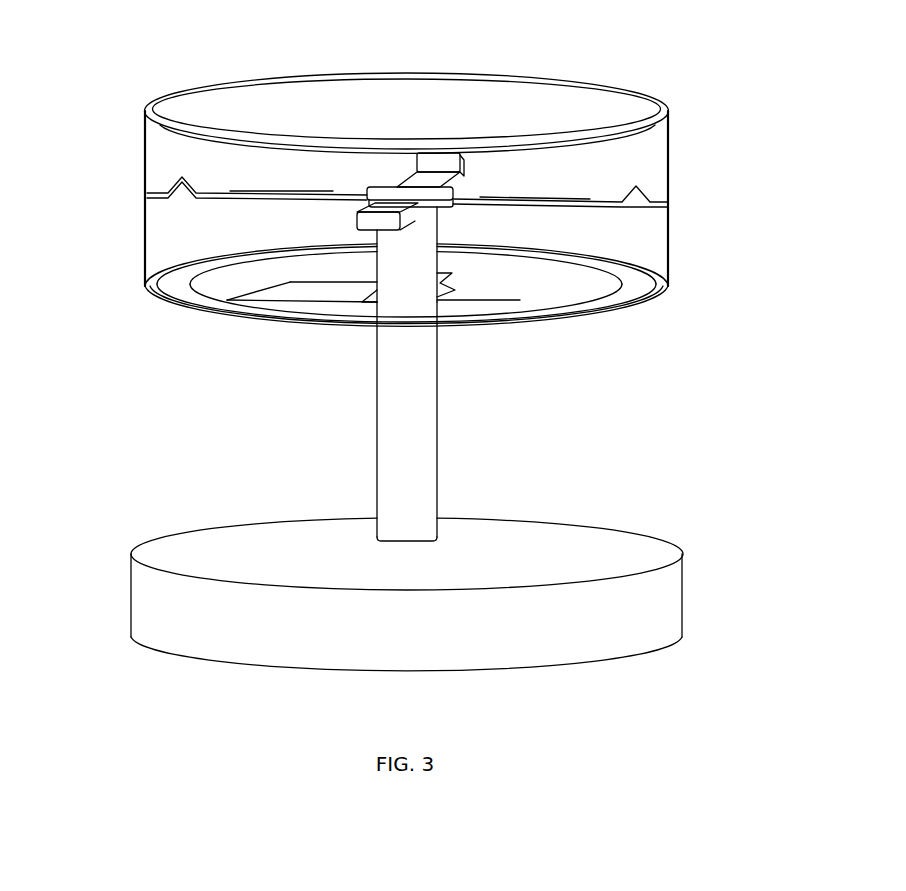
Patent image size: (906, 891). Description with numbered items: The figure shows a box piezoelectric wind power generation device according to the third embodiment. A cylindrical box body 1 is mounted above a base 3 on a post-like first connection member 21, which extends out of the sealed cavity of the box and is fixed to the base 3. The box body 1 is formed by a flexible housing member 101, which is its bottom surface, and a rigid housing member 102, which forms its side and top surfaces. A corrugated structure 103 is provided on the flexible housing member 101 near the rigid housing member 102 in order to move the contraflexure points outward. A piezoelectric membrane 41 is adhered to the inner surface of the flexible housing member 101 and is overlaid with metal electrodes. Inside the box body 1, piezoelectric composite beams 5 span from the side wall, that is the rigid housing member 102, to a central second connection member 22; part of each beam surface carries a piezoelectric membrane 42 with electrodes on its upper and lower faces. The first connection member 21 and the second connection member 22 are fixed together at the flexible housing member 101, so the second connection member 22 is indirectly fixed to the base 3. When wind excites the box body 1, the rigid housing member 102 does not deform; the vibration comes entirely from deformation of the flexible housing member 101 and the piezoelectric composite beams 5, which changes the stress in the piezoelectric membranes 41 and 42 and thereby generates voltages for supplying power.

The cylindrical box body 1 is at (660, 228).
The flexible housing member 101 is at (205, 297).
The rigid housing member 102 is at (227, 92).
The corrugated structure 103 is at (210, 272).
The piezoelectric composite beam 5 is at (212, 190).
The piezoelectric membrane 42 is at (407, 218).
The piezoelectric membrane 41 is at (387, 308).
The second connection member 22 is at (408, 255).
The first connection member 21 is at (413, 467).
The base 3 is at (536, 553).